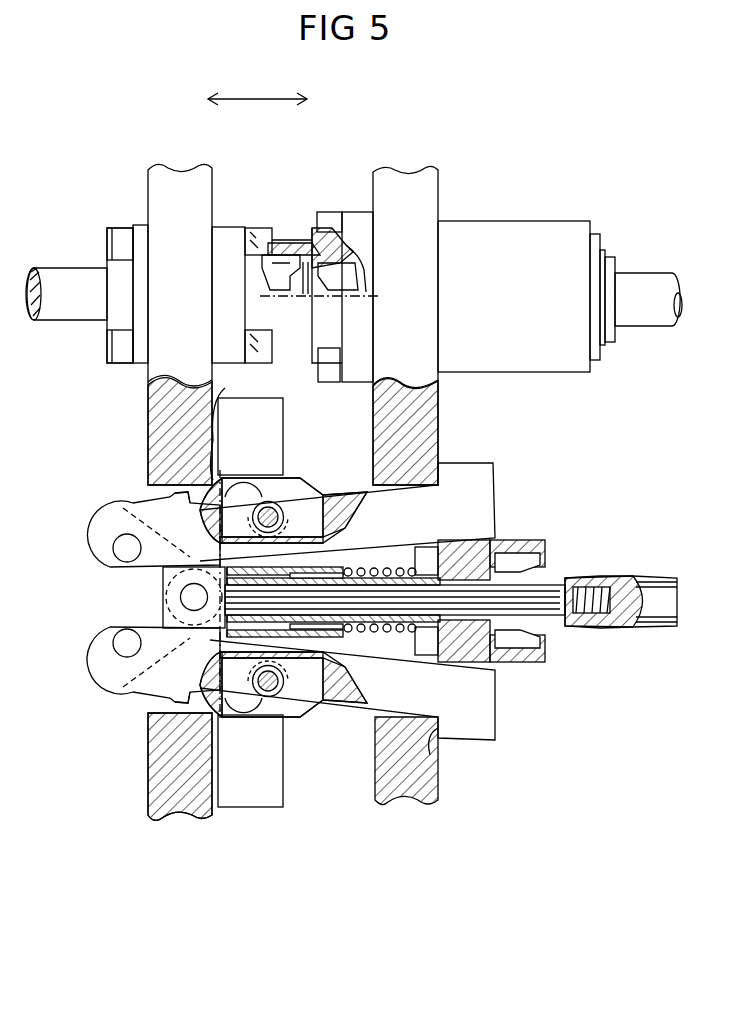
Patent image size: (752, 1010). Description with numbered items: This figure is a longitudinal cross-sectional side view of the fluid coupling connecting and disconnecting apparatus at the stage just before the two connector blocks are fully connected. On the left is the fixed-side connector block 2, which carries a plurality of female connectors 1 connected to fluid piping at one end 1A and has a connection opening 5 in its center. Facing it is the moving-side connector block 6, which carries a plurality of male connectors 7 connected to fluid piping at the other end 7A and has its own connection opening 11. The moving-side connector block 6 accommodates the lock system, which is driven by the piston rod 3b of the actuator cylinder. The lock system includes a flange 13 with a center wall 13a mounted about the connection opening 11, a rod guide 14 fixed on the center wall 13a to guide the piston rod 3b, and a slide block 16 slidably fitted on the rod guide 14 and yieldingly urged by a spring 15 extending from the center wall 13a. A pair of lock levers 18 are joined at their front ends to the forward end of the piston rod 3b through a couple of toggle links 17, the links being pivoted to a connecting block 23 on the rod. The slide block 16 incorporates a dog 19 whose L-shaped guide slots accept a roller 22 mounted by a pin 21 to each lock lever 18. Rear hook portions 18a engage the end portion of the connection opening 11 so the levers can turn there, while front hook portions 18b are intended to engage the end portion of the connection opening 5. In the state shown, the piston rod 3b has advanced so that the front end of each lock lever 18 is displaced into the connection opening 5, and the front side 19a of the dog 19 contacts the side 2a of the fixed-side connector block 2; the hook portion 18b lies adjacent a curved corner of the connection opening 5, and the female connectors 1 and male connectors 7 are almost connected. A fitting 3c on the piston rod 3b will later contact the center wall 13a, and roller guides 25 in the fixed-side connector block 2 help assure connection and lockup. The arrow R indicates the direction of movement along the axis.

The female connector 1 is at (230, 228).
The one end 1A is at (62, 282).
The fixed-side connector block 2 is at (148, 392).
The side of the fixed-side connector block 2a is at (222, 807).
The piston rod 3b is at (560, 574).
The fitting 3c is at (655, 628).
The connection opening 5 is at (148, 712).
The moving-side connector block 6 is at (438, 397).
The male connector 7 is at (330, 212).
The other end 7A is at (652, 285).
The connection opening 11 is at (397, 708).
The flange 13 is at (495, 470).
The center wall 13a is at (478, 540).
The rod guide 14 is at (400, 625).
The spring 15 is at (368, 635).
The slide block 16 is at (323, 562).
The toggle links 17 is at (165, 626).
The lock lever 18 is at (125, 502).
The hook portion 18a is at (433, 485).
The hook portion 18b is at (148, 442).
The dog 19 is at (258, 720).
The front side of the dog 19a is at (225, 388).
The pin 21 is at (262, 480).
The roller 22 is at (292, 503).
The connecting block 23 is at (115, 668).
The roller guide 25 is at (262, 412).
The rotation direction R is at (135, 497).